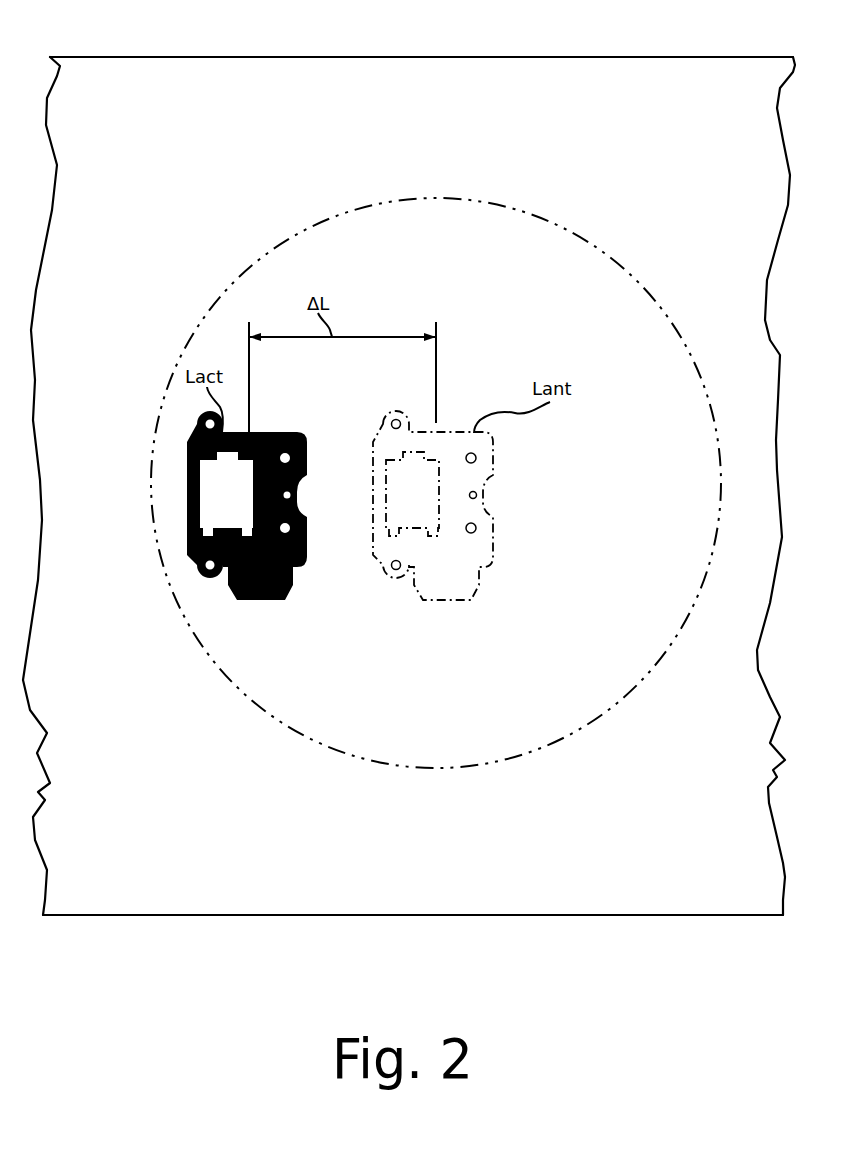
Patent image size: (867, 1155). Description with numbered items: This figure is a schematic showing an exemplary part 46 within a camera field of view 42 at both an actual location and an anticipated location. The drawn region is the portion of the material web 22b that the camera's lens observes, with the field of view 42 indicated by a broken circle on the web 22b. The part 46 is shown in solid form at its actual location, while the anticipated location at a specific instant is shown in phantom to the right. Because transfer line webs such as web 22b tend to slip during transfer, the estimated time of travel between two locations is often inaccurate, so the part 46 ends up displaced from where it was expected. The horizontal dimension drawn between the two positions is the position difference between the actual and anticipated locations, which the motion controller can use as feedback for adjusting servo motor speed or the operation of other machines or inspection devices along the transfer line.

The material web section 22b is at (363, 139).
The field of view 42 is at (196, 328).
The part 46 is at (178, 508).